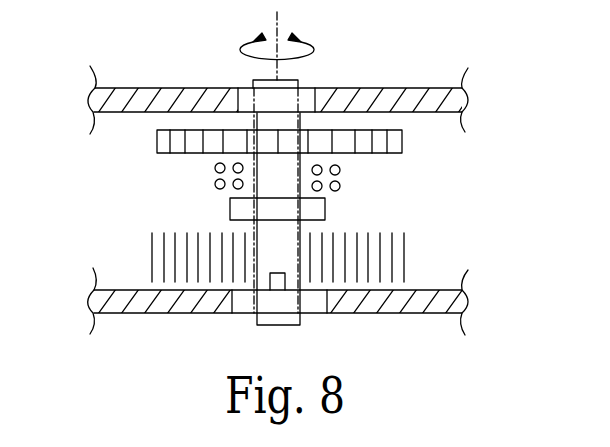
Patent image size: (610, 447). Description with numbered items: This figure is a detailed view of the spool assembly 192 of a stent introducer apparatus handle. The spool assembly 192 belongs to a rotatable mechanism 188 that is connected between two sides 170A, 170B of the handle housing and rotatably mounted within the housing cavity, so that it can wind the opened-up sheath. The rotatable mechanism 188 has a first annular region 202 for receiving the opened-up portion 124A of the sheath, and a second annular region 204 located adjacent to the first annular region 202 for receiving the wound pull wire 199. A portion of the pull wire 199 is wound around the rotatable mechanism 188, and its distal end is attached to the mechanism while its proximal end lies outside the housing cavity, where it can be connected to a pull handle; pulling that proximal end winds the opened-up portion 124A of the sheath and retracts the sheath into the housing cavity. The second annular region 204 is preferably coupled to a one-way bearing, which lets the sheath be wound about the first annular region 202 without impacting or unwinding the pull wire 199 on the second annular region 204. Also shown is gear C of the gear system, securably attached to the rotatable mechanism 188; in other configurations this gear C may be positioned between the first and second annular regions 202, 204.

The side of the housing 170A is at (462, 104).
The side of the housing 170B is at (462, 301).
The rotatable mechanism 188 is at (400, 207).
The gear C is at (157, 140).
The pull wire 199 is at (215, 169).
The second annular region 204 is at (290, 185).
The opened-up portion of the sheath 124A is at (156, 256).
The spool assembly 192 is at (266, 262).
The first annular region 202 is at (288, 263).